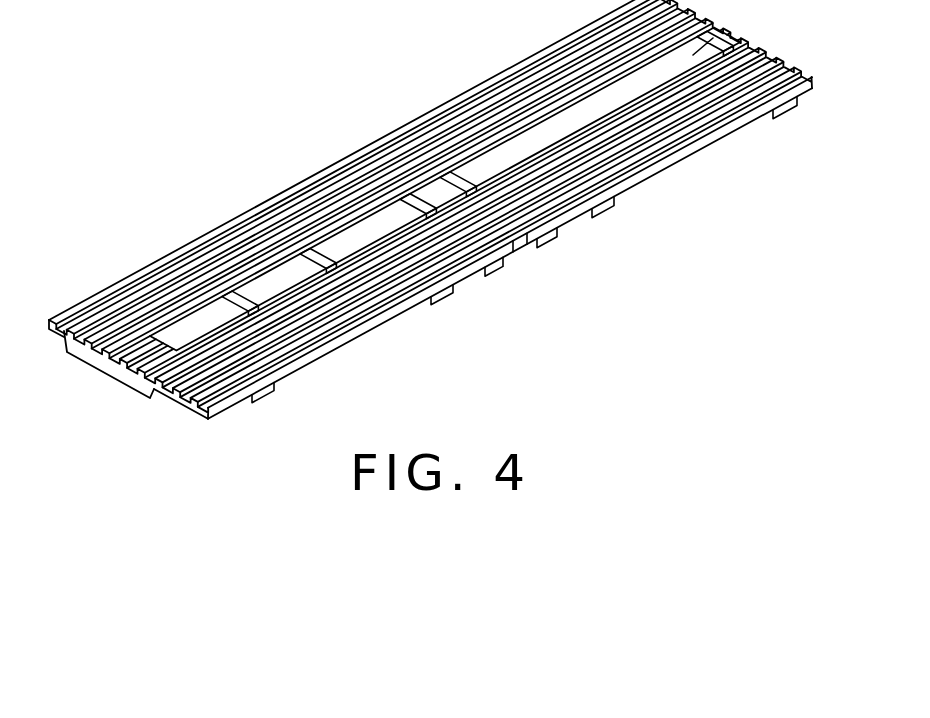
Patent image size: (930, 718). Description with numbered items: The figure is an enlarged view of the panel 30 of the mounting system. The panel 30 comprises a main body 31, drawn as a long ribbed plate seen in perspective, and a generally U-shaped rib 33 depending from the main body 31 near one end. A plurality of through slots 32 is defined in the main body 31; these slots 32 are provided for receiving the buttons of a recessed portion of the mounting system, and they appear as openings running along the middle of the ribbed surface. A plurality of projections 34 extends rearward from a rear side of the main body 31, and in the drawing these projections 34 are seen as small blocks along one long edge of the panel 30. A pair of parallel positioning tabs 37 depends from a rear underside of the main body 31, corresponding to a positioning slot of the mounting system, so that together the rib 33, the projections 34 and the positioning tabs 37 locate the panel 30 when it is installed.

The panel 30 is at (430, 232).
The main body 31 is at (158, 290).
The through slots 32 is at (728, 27).
The U-shaped rib 33 is at (108, 367).
The projections 34 is at (268, 399).
The positioning tabs 37 is at (497, 277).